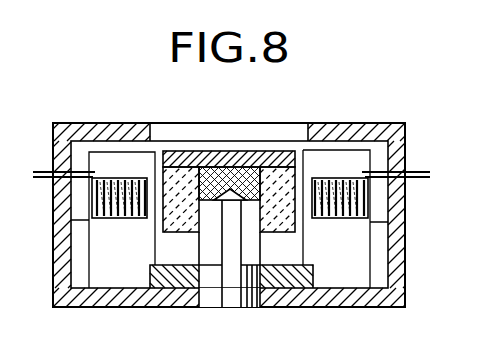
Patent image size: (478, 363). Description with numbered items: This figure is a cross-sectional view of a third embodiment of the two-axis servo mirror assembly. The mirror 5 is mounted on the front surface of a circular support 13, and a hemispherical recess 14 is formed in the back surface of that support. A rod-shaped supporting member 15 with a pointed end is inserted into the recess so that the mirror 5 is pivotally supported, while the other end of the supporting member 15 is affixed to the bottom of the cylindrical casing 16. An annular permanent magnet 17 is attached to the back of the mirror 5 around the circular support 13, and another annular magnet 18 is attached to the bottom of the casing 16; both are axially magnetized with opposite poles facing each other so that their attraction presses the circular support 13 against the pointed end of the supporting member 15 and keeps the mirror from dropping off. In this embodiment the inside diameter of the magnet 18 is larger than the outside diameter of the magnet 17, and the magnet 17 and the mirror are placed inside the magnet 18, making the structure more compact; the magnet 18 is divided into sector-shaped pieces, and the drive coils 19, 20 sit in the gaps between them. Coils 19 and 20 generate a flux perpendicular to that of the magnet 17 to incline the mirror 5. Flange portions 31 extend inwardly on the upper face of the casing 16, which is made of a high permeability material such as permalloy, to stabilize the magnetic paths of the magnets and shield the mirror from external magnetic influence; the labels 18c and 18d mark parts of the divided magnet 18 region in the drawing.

The two-axis servo mirror 5 is at (208, 158).
The circular support 13 is at (224, 168).
The hemispherical recess 14 is at (180, 160).
The supporting member 15 is at (230, 252).
The cylindrical casing 16 is at (398, 228).
The annular permanent magnet 17 is at (287, 168).
The annular magnet 18 is at (372, 266).
The coil frame 18c is at (117, 263).
The coil frame 18d is at (355, 162).
The drive coil 19 is at (97, 202).
The drive coil 20 is at (328, 180).
The flange portion 31 is at (130, 132).